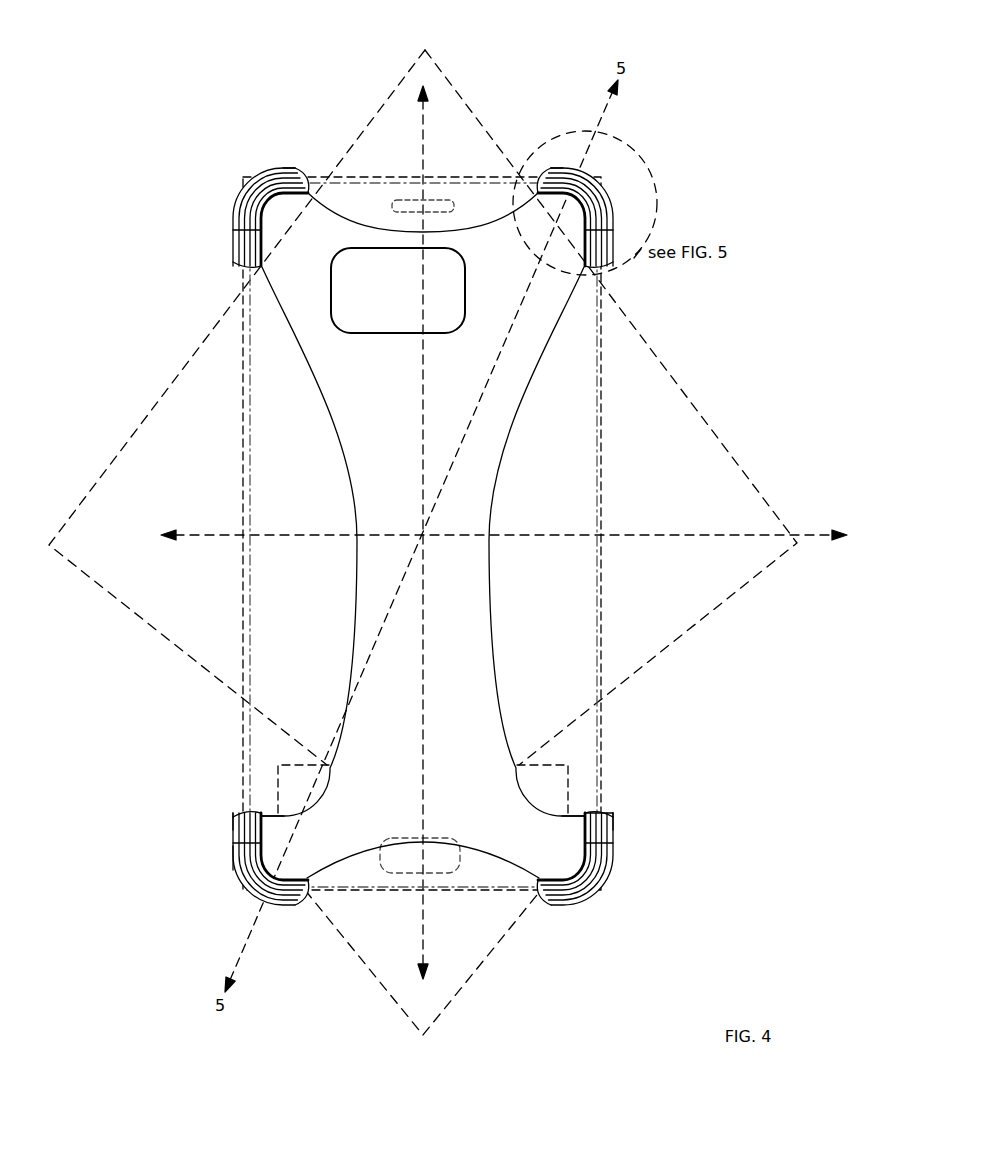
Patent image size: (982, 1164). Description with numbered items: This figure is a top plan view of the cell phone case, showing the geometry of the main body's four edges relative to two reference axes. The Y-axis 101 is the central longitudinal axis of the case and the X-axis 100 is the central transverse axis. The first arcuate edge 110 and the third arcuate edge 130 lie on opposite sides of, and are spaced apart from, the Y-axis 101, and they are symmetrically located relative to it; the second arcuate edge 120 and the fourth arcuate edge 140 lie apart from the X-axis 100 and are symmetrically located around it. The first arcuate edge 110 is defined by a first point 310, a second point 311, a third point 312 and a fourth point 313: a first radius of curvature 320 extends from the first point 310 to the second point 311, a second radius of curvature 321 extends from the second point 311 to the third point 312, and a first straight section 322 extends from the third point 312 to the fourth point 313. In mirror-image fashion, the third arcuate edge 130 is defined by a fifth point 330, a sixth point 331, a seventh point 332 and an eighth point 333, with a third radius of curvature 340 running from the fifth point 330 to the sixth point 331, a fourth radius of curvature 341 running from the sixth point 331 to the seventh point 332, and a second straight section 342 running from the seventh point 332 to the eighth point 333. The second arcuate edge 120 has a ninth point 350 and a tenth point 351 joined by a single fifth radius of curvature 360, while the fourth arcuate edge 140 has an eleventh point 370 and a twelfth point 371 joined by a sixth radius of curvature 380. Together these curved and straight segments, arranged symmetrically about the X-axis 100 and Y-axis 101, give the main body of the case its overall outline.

The X-axis 100 is at (513, 521).
The Y-axis 101 is at (435, 532).
The first arcuate edge 110 is at (349, 493).
The second arcuate edge 120 is at (497, 857).
The third arcuate edge 130 is at (497, 655).
The fourth arcuate edge 140 is at (457, 222).
The first point 310 is at (258, 240).
The second point 311 is at (322, 767).
The third point 312 is at (283, 820).
The fourth point 313 is at (257, 817).
The first radius of curvature 320 is at (367, 413).
The second radius of curvature 321 is at (283, 762).
The first straight section 322 is at (236, 868).
The fifth point 330 is at (587, 270).
The sixth point 331 is at (486, 752).
The seventh point 332 is at (563, 815).
The eighth point 333 is at (586, 820).
The third radius of curvature 340 is at (492, 500).
The fourth radius of curvature 341 is at (553, 765).
The second straight section 342 is at (584, 812).
The ninth point 350 is at (318, 893).
The tenth point 351 is at (531, 888).
The fifth radius of curvature 360 is at (415, 872).
The eleventh point 370 is at (331, 168).
The twelfth point 371 is at (530, 188).
The sixth radius of curvature 380 is at (441, 72).